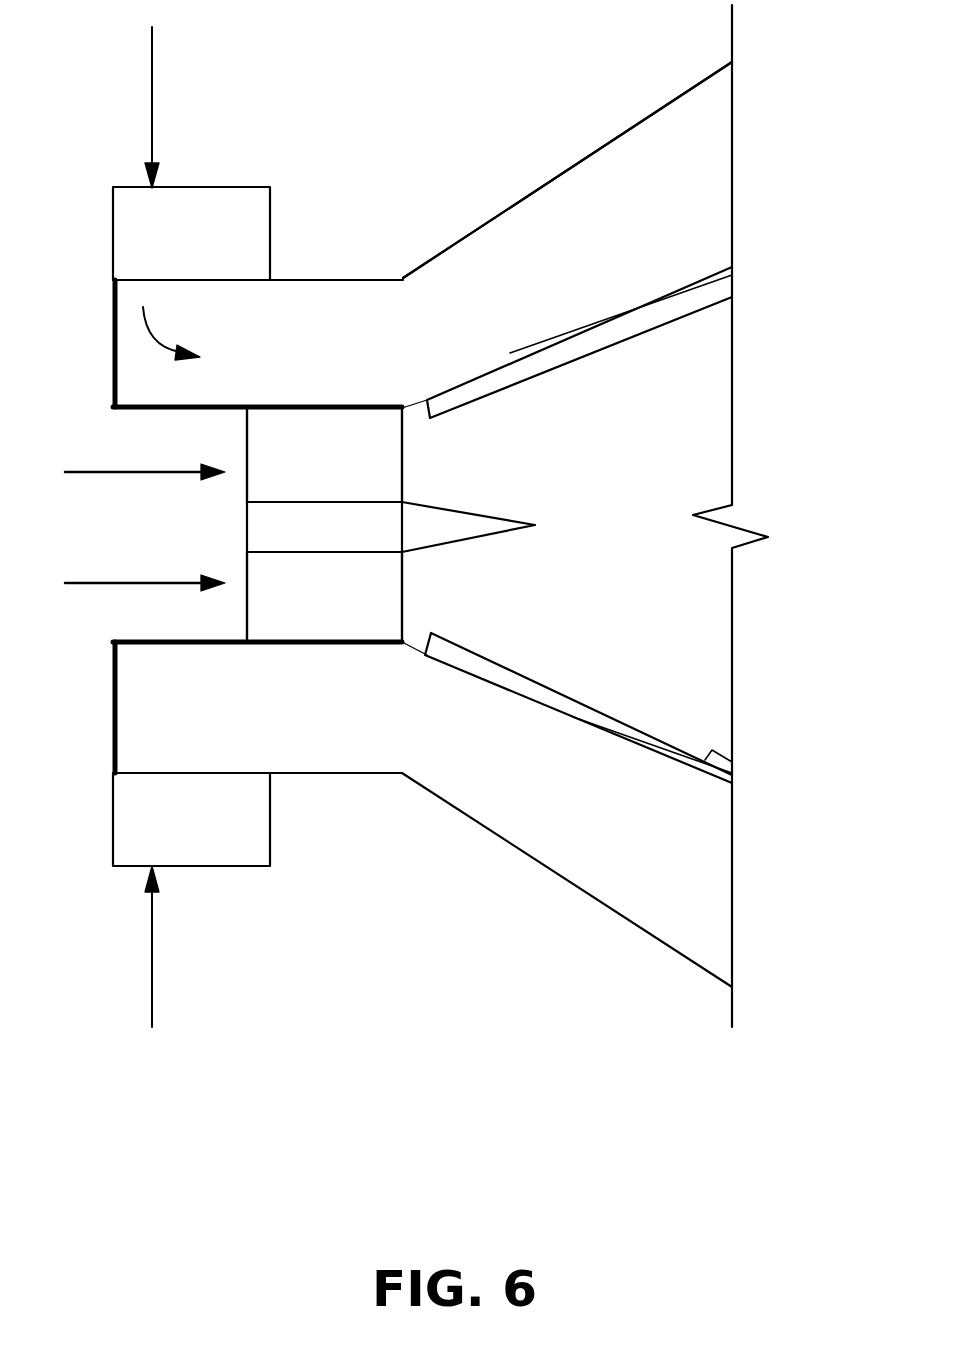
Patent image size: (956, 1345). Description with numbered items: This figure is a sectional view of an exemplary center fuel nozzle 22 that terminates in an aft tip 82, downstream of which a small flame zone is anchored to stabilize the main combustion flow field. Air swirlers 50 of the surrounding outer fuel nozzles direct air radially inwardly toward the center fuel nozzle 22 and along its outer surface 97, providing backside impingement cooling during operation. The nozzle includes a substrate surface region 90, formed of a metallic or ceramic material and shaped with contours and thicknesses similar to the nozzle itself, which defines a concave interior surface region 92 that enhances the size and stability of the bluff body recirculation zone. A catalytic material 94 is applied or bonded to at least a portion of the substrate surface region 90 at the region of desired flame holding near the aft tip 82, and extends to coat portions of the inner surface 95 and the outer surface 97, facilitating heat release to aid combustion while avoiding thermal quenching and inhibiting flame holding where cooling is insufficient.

The center fuel nozzle 22 is at (334, 230).
The air swirlers 50 is at (220, 200).
The aft tip 82 is at (627, 156).
The substrate surface region 90 is at (680, 680).
The concave interior surface region 92 is at (712, 750).
The catalytic material 94 is at (548, 677).
The inner surface 95 is at (384, 637).
The outer surface 97 is at (515, 202).